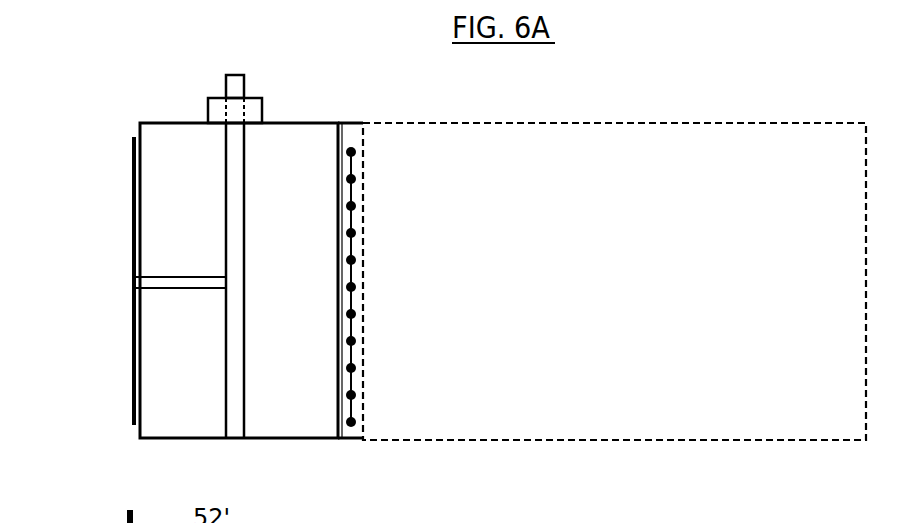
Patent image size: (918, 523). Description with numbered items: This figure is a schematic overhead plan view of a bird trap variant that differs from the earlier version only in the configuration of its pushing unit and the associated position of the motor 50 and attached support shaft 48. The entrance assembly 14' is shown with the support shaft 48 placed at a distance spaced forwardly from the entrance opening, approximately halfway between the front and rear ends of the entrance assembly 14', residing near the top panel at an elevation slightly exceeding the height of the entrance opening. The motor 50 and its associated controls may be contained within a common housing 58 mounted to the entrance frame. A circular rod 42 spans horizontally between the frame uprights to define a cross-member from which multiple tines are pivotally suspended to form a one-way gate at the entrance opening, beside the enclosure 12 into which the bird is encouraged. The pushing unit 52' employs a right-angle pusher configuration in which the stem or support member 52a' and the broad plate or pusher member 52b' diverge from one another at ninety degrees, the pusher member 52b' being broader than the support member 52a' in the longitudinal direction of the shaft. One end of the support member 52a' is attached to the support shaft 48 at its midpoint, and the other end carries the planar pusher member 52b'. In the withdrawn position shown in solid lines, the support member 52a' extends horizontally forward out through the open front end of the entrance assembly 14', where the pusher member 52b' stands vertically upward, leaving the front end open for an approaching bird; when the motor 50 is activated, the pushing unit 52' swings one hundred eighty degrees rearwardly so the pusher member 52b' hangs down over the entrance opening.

The entrance assembly 14' is at (244, 243).
The support shaft 48 is at (225, 190).
The motor 50 is at (233, 90).
The housing 58 is at (252, 112).
The circular rod 42 is at (353, 195).
The substrate 12 is at (486, 455).
The pushing unit 52' is at (89, 281).
The support member 52a' is at (181, 253).
The pusher member 52b' is at (78, 281).